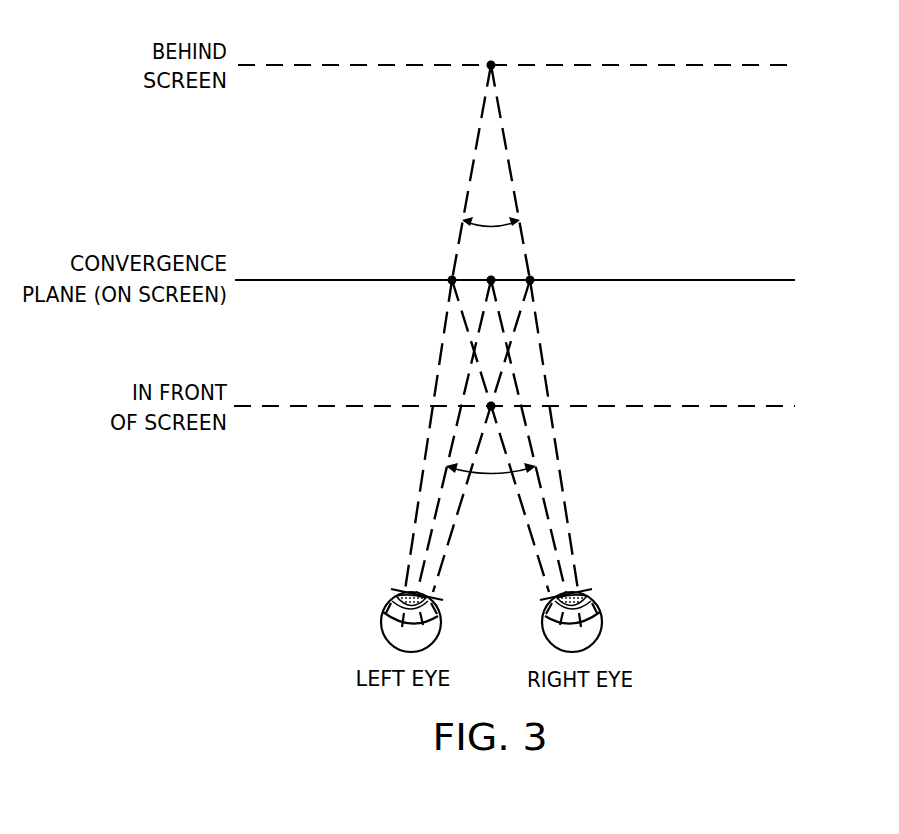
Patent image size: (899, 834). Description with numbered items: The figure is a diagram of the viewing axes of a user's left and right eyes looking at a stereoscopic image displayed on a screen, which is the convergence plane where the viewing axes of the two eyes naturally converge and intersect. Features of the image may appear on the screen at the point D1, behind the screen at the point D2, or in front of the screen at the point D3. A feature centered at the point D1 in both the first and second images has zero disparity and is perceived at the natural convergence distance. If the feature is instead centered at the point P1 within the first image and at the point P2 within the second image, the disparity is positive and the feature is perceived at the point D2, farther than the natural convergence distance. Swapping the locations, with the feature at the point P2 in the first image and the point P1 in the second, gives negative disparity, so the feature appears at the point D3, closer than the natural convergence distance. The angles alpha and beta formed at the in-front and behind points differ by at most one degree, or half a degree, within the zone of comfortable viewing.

The point on the screen D1 is at (494, 284).
The point behind the screen D2 is at (492, 62).
The point in front of the screen D3 is at (494, 404).
The point within the first image P1 is at (451, 279).
The point within the second image P2 is at (532, 279).